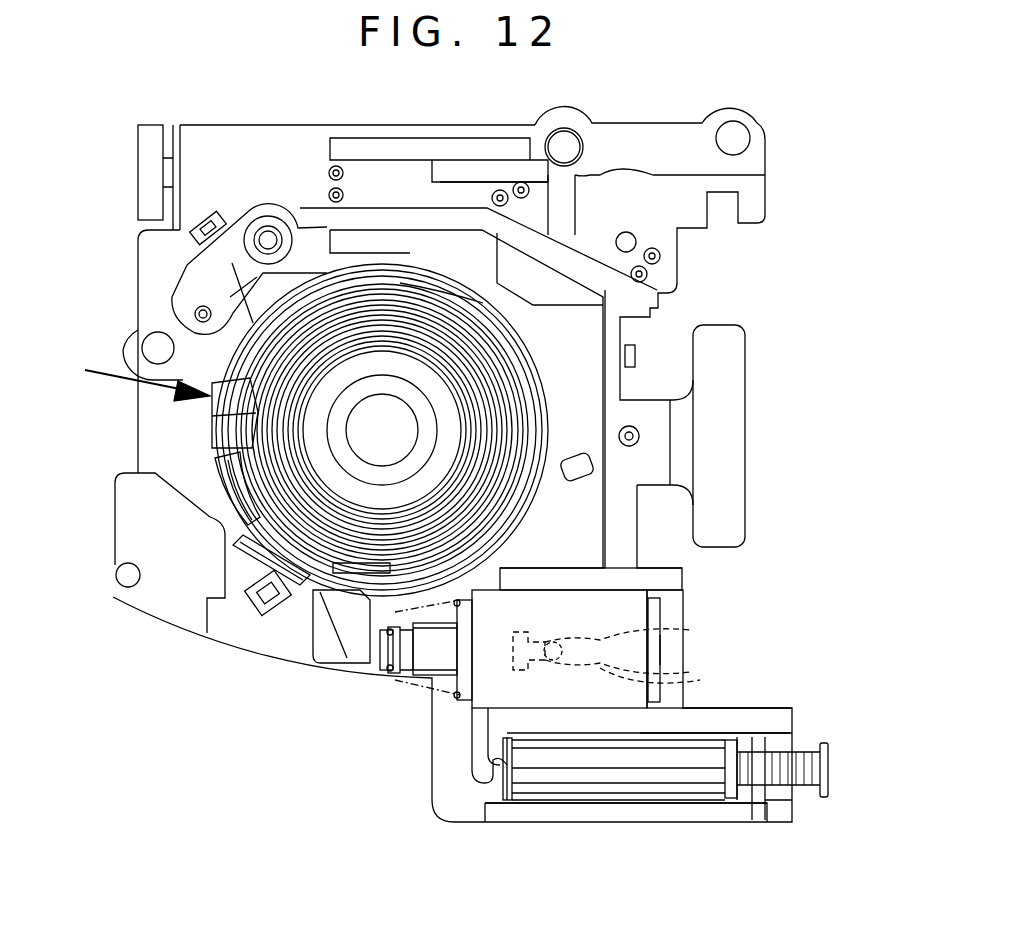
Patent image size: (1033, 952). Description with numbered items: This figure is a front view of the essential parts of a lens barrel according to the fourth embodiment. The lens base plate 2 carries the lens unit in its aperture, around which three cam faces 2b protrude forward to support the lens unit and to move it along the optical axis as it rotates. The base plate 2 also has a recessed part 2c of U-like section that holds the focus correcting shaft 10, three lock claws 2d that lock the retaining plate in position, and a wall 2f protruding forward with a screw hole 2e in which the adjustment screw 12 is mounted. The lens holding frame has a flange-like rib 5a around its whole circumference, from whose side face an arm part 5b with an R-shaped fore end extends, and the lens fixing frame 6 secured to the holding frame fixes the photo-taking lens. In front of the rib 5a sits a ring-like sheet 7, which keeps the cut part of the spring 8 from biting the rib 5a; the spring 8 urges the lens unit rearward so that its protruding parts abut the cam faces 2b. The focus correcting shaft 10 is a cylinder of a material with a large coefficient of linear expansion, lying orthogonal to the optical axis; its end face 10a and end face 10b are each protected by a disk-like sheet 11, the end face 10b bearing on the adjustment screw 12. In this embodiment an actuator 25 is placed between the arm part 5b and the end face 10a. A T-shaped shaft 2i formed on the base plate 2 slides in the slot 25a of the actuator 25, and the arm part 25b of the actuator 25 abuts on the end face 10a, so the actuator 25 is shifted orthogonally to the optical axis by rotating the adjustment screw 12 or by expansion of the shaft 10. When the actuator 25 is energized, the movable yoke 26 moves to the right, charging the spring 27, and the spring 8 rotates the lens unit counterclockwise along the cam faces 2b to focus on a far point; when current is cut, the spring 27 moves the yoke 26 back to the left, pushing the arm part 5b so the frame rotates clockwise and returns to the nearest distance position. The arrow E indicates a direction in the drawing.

The lens base plate 2 is at (140, 522).
The cam faces 2b is at (490, 305).
The recessed part 2c is at (618, 800).
The lock claws 2d is at (205, 215).
The screw hole 2e is at (795, 750).
The wall 2f is at (790, 800).
The T-shaped shaft 2i is at (670, 675).
The rib 5a is at (335, 280).
The arm part 5b is at (345, 620).
The lens fixing frame 6 is at (415, 320).
The ring-like sheet 7 is at (240, 345).
The spring 8 is at (228, 452).
The focus correcting shaft 10 is at (575, 782).
The end face 10a is at (520, 782).
The end face 10b is at (725, 782).
The sheets 11 is at (498, 790).
The adjustment screw 12 is at (828, 768).
The actuator 25 is at (640, 612).
The slot 25a is at (670, 630).
The arm part 25b is at (475, 770).
The movable yoke 26 is at (385, 670).
The spring 27 is at (412, 680).
The direction arrow E is at (136, 375).